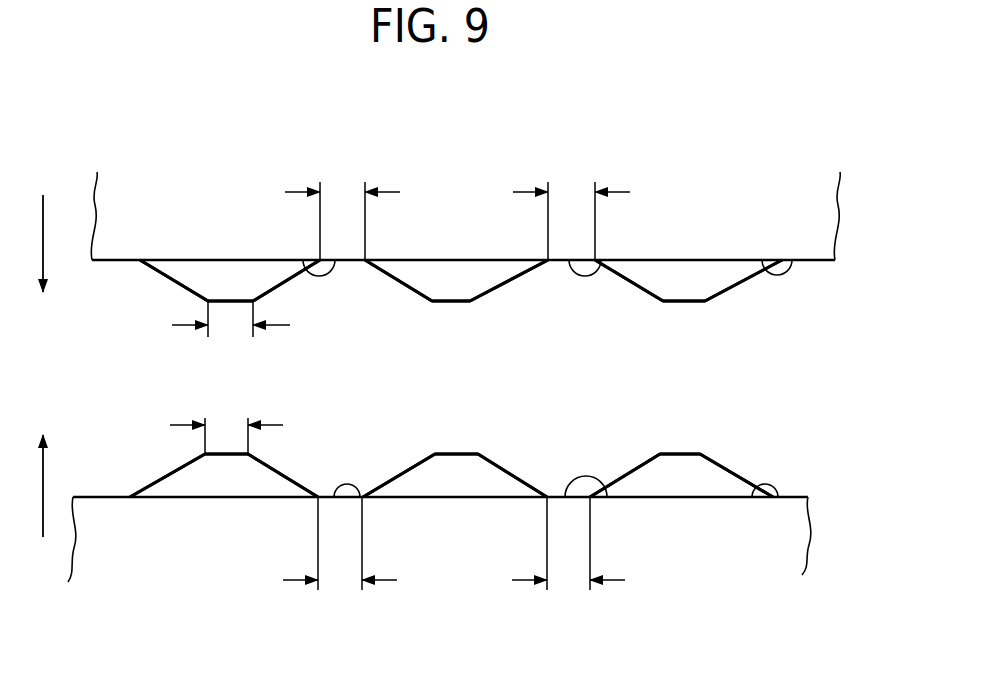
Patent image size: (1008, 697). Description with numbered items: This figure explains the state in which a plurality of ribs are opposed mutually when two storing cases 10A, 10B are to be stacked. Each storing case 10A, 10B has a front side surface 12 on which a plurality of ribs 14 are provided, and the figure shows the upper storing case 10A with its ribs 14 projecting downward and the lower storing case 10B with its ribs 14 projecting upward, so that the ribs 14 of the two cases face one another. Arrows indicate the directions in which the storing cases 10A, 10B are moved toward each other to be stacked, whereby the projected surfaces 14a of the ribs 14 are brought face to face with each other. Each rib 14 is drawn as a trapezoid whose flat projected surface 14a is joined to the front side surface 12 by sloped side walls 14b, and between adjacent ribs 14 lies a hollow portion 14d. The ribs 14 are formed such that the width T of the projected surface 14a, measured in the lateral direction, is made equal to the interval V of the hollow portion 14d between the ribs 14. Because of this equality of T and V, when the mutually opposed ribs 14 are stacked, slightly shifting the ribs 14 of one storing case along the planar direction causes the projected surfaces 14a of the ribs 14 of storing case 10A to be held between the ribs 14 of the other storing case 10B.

The storing case 10A is at (187, 196).
The storing case 10B is at (166, 546).
The front side surface 12 is at (790, 260).
The rib 14 is at (229, 248).
The projected surface 14a is at (212, 314).
The sloped side wall 14b is at (150, 270).
The hollow portion 14d is at (321, 266).
The interval V is at (392, 192).
The width T is at (180, 327).